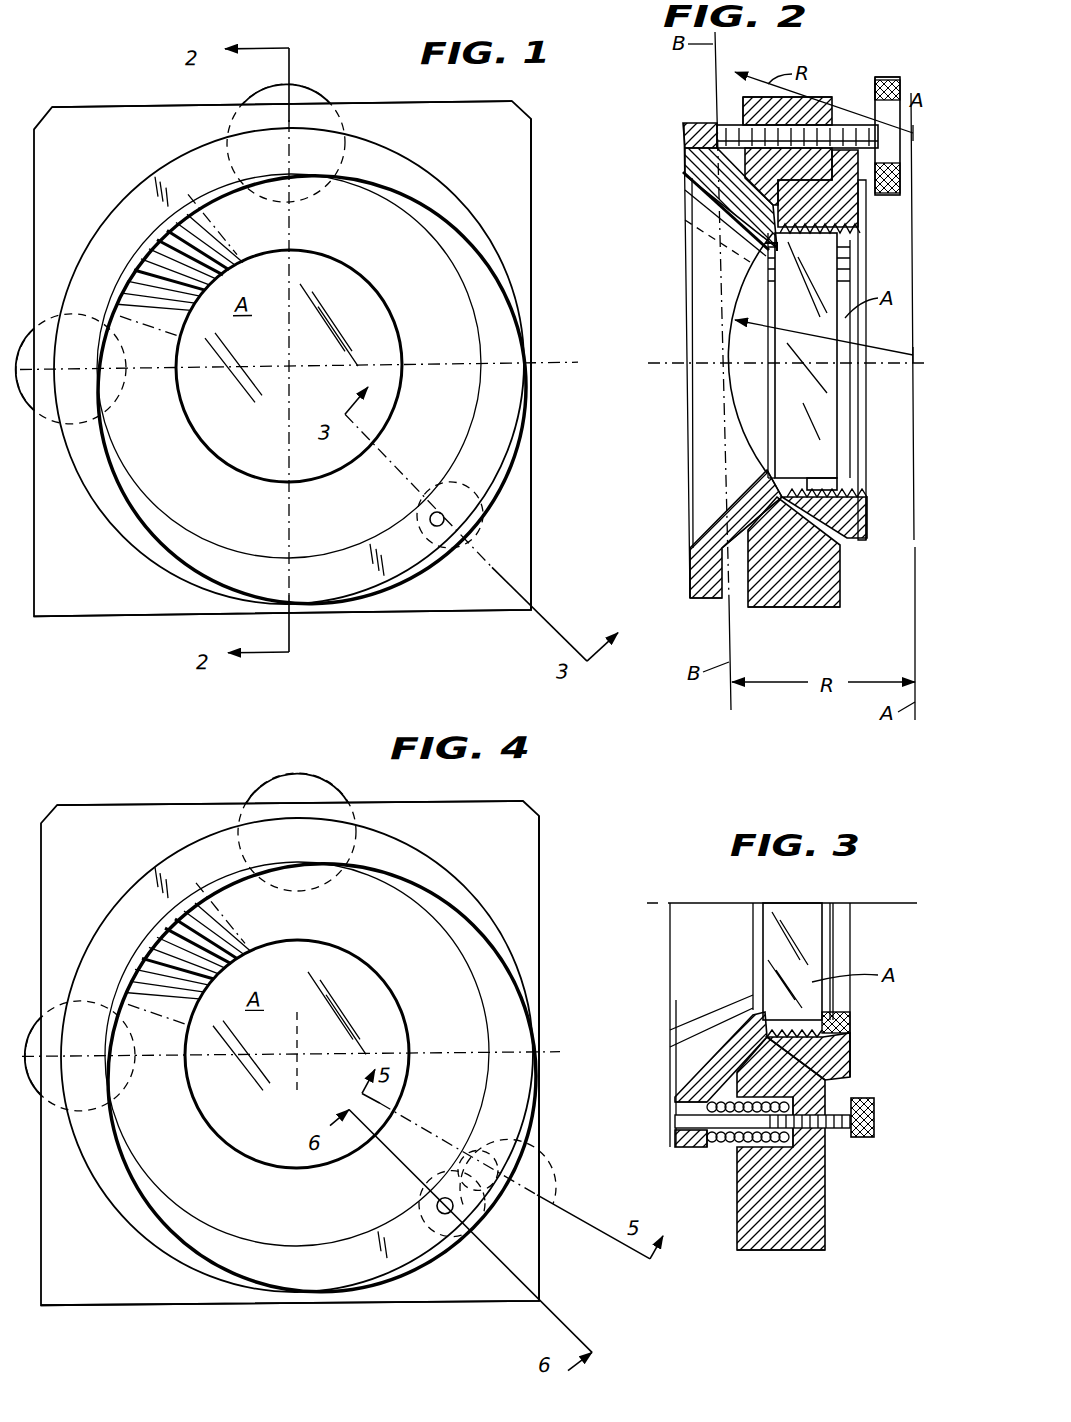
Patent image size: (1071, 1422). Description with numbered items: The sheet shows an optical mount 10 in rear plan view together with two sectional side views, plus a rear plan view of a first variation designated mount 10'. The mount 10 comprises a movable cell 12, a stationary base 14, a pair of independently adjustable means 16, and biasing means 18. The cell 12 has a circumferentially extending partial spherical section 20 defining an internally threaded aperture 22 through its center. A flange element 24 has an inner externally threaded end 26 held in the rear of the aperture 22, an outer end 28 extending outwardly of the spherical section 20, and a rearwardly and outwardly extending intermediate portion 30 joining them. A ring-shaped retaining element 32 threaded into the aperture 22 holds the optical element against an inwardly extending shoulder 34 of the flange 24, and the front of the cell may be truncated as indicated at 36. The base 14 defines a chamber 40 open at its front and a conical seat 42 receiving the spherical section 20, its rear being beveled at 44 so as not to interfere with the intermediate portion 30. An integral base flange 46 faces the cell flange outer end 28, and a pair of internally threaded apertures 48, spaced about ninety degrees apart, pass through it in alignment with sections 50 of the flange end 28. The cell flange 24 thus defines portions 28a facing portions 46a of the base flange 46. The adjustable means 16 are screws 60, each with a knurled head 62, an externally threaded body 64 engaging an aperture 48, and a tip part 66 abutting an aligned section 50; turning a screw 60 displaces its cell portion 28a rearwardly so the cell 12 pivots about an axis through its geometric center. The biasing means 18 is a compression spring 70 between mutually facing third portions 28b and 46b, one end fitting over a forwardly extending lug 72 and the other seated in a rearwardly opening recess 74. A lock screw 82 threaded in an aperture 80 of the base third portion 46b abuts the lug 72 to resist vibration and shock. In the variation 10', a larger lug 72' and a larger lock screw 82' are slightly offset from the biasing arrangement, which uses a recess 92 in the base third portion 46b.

In FIG. 1, the optical mount 10 is at (306, 350).
In FIG. 2, the optical mount 10 is at (787, 360).
In FIG. 3, the optical mount 10 is at (782, 1024).
In FIG. 4, the mount 10' is at (319, 1034).
In FIG. 1, the movable cell 12 is at (165, 574).
In FIG. 4, the movable cell 12 is at (178, 1262).
In FIG. 2, the movable cell 12 is at (870, 518).
In FIG. 3, the movable cell 12 is at (855, 1060).
In FIG. 1, the stationary base 14 is at (535, 420).
In FIG. 4, the stationary base 14 is at (542, 900).
In FIG. 2, the stationary base 14 is at (845, 596).
In FIG. 3, the stationary base 14 is at (808, 1252).
In FIG. 1, the independently adjustable means 16 is at (316, 92).
In FIG. 4, the independently adjustable means 16 is at (320, 760).
In FIG. 2, the independently adjustable means 16 is at (866, 155).
In FIG. 3, the biasing means 18 is at (718, 1145).
In FIG. 2, the partial spherical section 20 is at (843, 548).
In FIG. 3, the partial spherical section 20 is at (852, 1048).
In FIG. 2, the internally threaded aperture 22 is at (838, 445).
In FIG. 1, the flange element 24 is at (462, 197).
In FIG. 4, the flange element 24 is at (458, 877).
In FIG. 2, the flange element 24 is at (716, 200).
In FIG. 3, the flange element 24 is at (708, 1060).
In FIG. 2, the inner externally threaded end 26 is at (773, 452).
In FIG. 1, the outer end 28 is at (478, 246).
In FIG. 4, the outer end 28 is at (490, 916).
In FIG. 2, the outer end 28 is at (690, 585).
In FIG. 2, the cell flange portions 28a is at (717, 136).
In FIG. 3, the cell third portion 28b is at (676, 1140).
In FIG. 1, the intermediate portion 30 is at (426, 280).
In FIG. 4, the intermediate portion 30 is at (422, 962).
In FIG. 2, the intermediate portion 30 is at (758, 478).
In FIG. 2, the retaining element 32 is at (850, 255).
In FIG. 3, the retaining element 32 is at (850, 1024).
In FIG. 2, the shoulder 34 is at (762, 250).
In FIG. 2, the truncated portion 36 is at (860, 538).
In FIG. 2, the chamber 40 is at (785, 560).
In FIG. 2, the conical seat 42 is at (848, 478).
In FIG. 2, the beveled rear portion 44 is at (748, 525).
In FIG. 1, the base flange 46 is at (150, 102).
In FIG. 4, the base flange 46 is at (190, 800).
In FIG. 2, the base flange 46 is at (732, 592).
In FIG. 2, the base flange portions 46a is at (752, 85).
In FIG. 3, the base third portion 46b is at (737, 1250).
In FIG. 2, the internally threaded apertures 48 is at (745, 130).
In FIG. 2, the cell flange sections 50 is at (722, 130).
In FIG. 2, the screws 60 is at (900, 80).
In FIG. 2, the knurled head 62 is at (888, 76).
In FIG. 2, the externally threaded body 64 is at (848, 120).
In FIG. 2, the tip part 66 is at (698, 185).
In FIG. 3, the compression spring 70 is at (708, 1102).
In FIG. 1, the lug 72 is at (447, 556).
In FIG. 3, the lug 72 is at (737, 1113).
In FIG. 4, the lug 72' is at (454, 1244).
In FIG. 3, the recess 74 is at (782, 1135).
In FIG. 3, the internally threaded aperture 80 is at (820, 1143).
In FIG. 1, the lock screw 82 is at (463, 514).
In FIG. 3, the lock screw 82 is at (878, 1117).
In FIG. 4, the lock screw 82' is at (472, 1195).
In FIG. 4, the recess 92 is at (520, 1172).